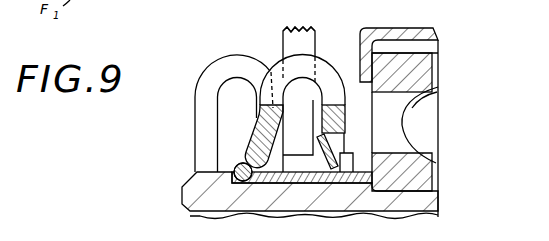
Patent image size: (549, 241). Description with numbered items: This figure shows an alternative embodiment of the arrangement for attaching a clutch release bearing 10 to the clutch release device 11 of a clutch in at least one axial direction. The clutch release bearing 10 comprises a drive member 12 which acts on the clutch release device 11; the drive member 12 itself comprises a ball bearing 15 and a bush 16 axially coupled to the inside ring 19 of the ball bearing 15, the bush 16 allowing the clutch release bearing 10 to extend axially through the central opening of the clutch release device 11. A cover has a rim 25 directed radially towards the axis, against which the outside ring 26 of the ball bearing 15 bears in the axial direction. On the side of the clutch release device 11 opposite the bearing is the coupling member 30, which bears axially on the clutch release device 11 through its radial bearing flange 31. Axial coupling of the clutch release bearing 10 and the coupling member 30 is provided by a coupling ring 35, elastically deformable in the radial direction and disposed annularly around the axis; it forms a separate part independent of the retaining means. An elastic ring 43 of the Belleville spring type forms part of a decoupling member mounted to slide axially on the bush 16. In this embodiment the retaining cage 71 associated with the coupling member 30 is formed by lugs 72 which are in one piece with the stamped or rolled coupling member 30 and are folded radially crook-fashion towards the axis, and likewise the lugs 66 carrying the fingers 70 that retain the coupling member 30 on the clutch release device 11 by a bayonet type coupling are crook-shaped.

The clutch release bearing 10 is at (430, 22).
The clutch release device 11 is at (308, 26).
The drive member 12 is at (182, 187).
The ball bearing 15 is at (438, 49).
The bush 16 is at (182, 206).
The inside ring 19 is at (430, 178).
The rim 25 is at (358, 60).
The outside ring 26 is at (422, 72).
The coupling member 30 is at (240, 147).
The radial bearing flange 31 is at (272, 143).
The coupling ring 35 is at (233, 163).
The elastic ring 43 is at (335, 145).
The lugs 66 is at (282, 50).
The fingers 70 is at (343, 123).
The retaining cage 71 is at (243, 103).
The lugs 72 is at (202, 103).